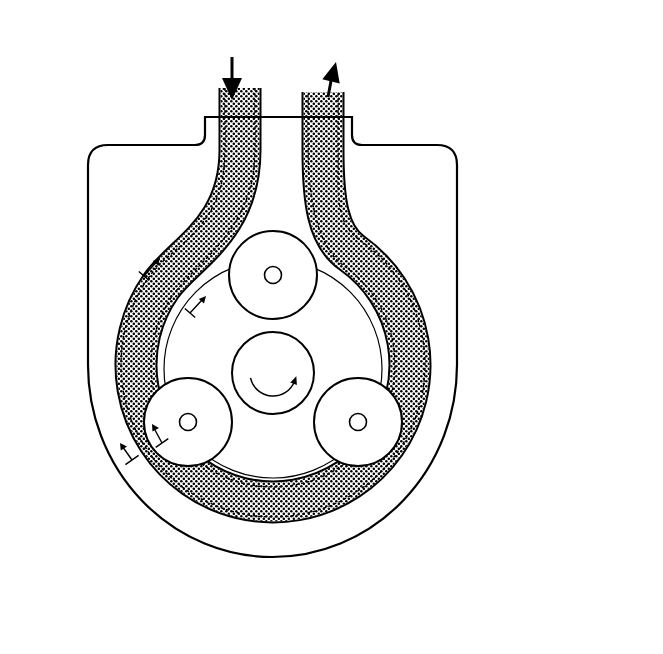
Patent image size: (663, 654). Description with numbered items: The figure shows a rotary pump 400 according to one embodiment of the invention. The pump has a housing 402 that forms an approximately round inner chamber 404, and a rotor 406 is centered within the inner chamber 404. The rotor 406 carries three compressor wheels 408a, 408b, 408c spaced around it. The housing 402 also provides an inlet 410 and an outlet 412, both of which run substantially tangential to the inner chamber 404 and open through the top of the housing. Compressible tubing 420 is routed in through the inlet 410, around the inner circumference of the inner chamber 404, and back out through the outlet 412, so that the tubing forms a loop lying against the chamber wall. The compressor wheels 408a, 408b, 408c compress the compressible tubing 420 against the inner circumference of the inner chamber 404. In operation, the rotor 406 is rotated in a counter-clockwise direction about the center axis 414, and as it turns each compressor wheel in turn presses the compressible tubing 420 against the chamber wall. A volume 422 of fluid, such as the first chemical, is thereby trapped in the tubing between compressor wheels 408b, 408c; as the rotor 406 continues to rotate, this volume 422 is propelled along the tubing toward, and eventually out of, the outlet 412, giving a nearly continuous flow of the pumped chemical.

The rotary pump 400 is at (95, 80).
The housing 402 is at (413, 144).
The inner chamber 404 is at (356, 246).
The rotor 406 is at (366, 353).
The compressor wheel 408a is at (317, 276).
The compressor wheel 408b is at (153, 470).
The compressor wheel 408c is at (392, 428).
The inlet 410 is at (262, 117).
The outlet 412 is at (300, 117).
The center axis 414 is at (292, 408).
The compressible tubing 420 is at (257, 112).
The volume 422 is at (272, 524).